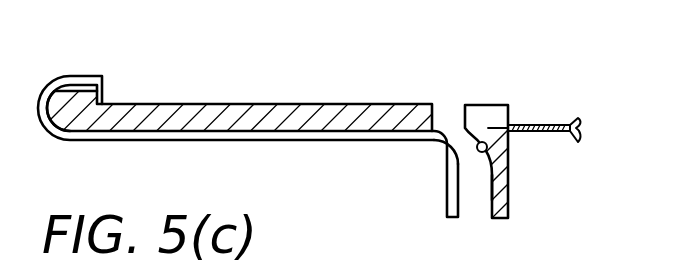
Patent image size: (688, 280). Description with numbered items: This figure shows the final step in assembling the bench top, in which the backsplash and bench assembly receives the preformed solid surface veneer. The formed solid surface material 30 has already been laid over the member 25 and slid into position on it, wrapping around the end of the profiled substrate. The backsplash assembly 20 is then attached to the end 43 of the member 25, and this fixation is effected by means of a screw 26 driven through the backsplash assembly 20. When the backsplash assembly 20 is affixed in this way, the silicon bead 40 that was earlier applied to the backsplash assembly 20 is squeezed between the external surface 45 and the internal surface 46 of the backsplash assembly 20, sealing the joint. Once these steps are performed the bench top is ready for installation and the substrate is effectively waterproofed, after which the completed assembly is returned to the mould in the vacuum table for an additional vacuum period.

The backsplash assembly 20 is at (508, 180).
The member 25 is at (132, 103).
The screw 26 is at (555, 126).
The formed solid surface material 30 is at (355, 143).
The silicon bead 40 is at (477, 153).
The end of member 43 is at (437, 117).
The external surface 45 is at (459, 152).
The internal surface of backsplash 46 is at (492, 188).